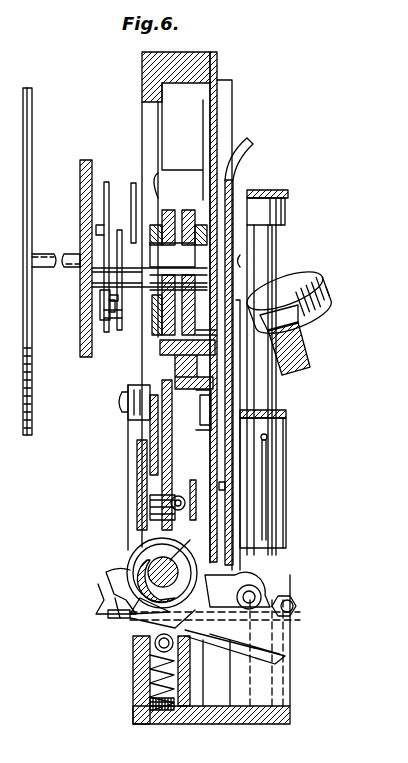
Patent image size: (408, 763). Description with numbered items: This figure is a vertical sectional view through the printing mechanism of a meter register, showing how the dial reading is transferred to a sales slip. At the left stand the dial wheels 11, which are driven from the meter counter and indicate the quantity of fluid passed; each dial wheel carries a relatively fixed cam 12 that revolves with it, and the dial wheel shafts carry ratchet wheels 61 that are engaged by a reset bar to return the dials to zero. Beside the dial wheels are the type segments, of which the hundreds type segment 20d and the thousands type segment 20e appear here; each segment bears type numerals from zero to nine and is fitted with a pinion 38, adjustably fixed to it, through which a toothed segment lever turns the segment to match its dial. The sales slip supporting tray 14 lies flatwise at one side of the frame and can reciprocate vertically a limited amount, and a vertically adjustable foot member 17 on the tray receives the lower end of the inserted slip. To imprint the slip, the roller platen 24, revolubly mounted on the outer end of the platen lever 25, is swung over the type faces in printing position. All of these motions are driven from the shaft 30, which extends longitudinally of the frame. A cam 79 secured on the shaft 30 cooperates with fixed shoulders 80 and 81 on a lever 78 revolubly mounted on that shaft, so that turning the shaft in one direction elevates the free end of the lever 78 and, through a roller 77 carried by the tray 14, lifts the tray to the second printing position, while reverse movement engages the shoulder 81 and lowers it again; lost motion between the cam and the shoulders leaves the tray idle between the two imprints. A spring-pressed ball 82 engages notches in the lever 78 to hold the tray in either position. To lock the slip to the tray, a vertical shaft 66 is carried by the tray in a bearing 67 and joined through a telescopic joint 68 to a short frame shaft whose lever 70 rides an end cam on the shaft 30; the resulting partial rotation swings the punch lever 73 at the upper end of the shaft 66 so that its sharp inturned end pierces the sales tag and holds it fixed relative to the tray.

The dial wheels 11 is at (32, 110).
The cam 12 is at (120, 323).
The sales slip supporting tray 14 is at (246, 158).
The foot member 17 is at (237, 466).
The hundreds type segment 20d is at (162, 356).
The thousands type segment 20e is at (176, 410).
The roller platen 24 is at (326, 318).
The platen lever 25 is at (302, 368).
The shaft 30 is at (154, 576).
The pinion 38 is at (186, 215).
The ratchet wheels 61 is at (132, 198).
The vertical shaft 66 is at (276, 260).
The bearing 67 is at (286, 224).
The telescopic joint 68 is at (286, 495).
The lever 70 is at (110, 613).
The punch lever 73 is at (272, 190).
The roller 77 is at (260, 595).
The lever 78 is at (288, 650).
The cam 79 is at (148, 556).
The shoulder 80 is at (141, 571).
The shoulder 81 is at (175, 607).
The spring-pressed ball 82 is at (158, 646).